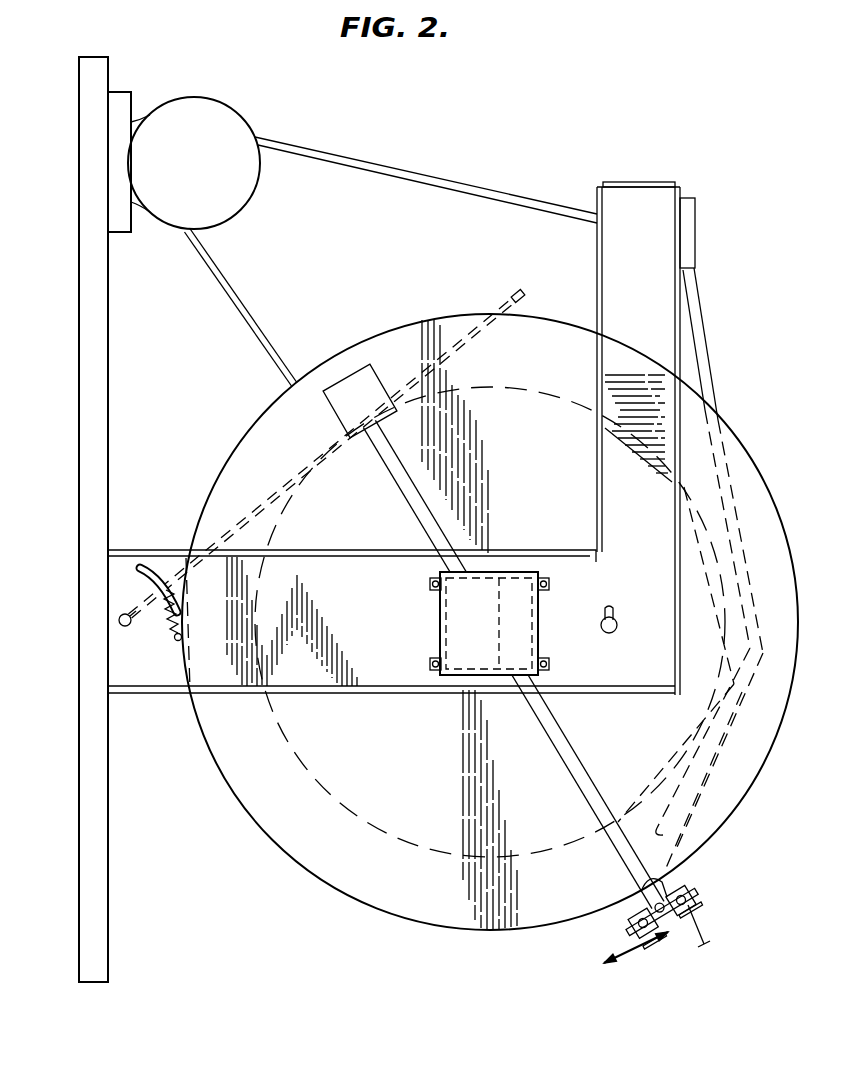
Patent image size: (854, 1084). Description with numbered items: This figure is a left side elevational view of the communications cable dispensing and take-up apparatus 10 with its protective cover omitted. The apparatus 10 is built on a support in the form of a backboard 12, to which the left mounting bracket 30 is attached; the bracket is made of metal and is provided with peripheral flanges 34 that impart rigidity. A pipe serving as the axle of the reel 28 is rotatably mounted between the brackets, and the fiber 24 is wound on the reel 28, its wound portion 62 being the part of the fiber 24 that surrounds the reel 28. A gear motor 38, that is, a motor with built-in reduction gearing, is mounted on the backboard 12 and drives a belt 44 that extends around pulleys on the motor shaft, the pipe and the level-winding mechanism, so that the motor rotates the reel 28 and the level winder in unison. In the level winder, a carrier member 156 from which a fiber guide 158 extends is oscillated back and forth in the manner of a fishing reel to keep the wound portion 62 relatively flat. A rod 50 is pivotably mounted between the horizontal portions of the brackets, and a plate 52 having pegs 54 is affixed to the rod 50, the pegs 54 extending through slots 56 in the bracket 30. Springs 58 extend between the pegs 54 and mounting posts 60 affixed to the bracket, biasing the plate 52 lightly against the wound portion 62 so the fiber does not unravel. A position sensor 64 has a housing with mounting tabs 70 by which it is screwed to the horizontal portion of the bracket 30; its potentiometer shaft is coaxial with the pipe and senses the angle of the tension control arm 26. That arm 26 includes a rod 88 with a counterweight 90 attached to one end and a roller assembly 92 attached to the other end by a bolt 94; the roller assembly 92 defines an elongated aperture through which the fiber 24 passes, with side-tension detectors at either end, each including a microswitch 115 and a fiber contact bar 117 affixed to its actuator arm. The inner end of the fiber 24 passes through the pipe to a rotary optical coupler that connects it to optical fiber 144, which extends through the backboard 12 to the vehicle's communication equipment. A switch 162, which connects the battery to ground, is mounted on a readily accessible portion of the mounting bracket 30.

The communications cable dispensing and take-up apparatus 10 is at (548, 132).
The backboard 12 is at (108, 382).
The fiber 24 is at (704, 930).
The tension control arm 26 is at (606, 750).
The reel 28 is at (346, 880).
The left mounting bracket 30 is at (122, 688).
The peripheral flanges 34 is at (628, 182).
The gear motor 38 is at (208, 68).
The belt 44 is at (438, 184).
The rod 50 is at (127, 627).
The plate 52 is at (513, 300).
The pegs 54 is at (178, 600).
The slots 56 is at (149, 568).
The springs 58 is at (186, 614).
The mounting posts 60 is at (180, 650).
The wound portion 62 is at (390, 814).
The position sensor 64 is at (440, 600).
The mounting tabs 70 is at (550, 586).
The rod 88 is at (568, 765).
The counterweight 90 is at (372, 392).
The roller assembly 92 is at (694, 896).
The bolt 94 is at (636, 914).
The microswitch 115 is at (646, 882).
The fiber contact bar 117 is at (699, 907).
The optical fiber 144 is at (79, 640).
The carrier member 156 is at (693, 232).
The fiber guide 158 is at (702, 320).
The switch 162 is at (607, 634).